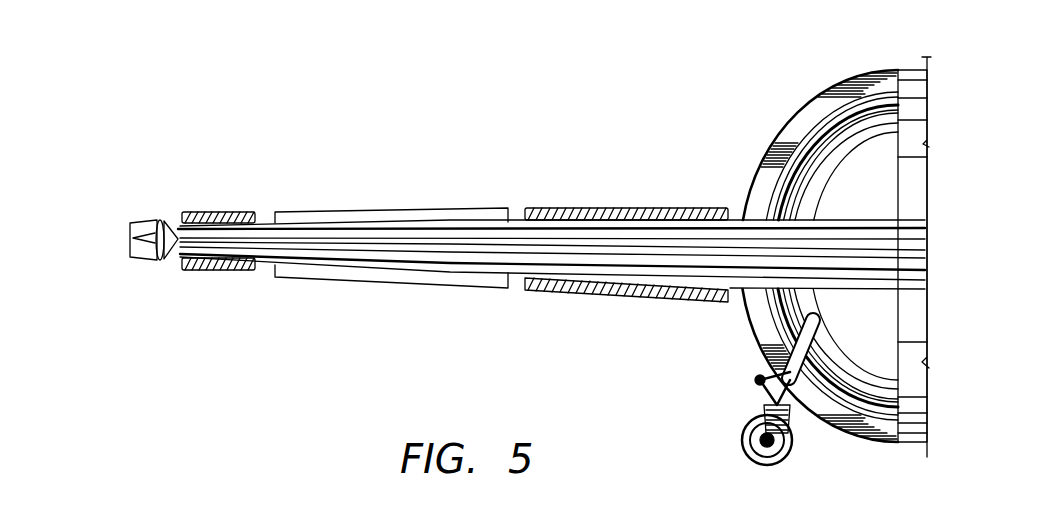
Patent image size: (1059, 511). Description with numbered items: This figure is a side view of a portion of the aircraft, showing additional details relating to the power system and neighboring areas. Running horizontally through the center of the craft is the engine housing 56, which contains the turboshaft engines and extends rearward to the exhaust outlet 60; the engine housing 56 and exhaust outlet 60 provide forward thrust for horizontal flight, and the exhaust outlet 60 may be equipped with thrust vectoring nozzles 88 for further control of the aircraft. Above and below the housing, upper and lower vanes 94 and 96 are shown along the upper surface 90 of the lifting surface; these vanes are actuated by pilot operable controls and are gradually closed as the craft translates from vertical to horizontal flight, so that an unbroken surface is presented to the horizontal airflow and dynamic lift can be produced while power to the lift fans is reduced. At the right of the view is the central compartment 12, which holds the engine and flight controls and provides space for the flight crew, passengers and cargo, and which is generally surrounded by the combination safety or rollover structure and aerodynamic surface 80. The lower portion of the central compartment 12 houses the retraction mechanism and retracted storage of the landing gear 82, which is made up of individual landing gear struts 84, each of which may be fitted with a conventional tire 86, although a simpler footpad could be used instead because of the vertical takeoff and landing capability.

The central compartment 12 is at (884, 209).
The engine housing 56 is at (853, 268).
The exhaust outlet 60 is at (96, 227).
The combination safety or rollover structure and aerodynamic surface 80 is at (906, 67).
The landing gear 82 is at (740, 384).
The landing gear strut 84 is at (762, 341).
The tire 86 is at (741, 452).
The thrust vectoring nozzle 88 is at (157, 221).
The upper surface 90 is at (515, 210).
The upper vane 94 is at (300, 211).
The lower vane 96 is at (290, 274).